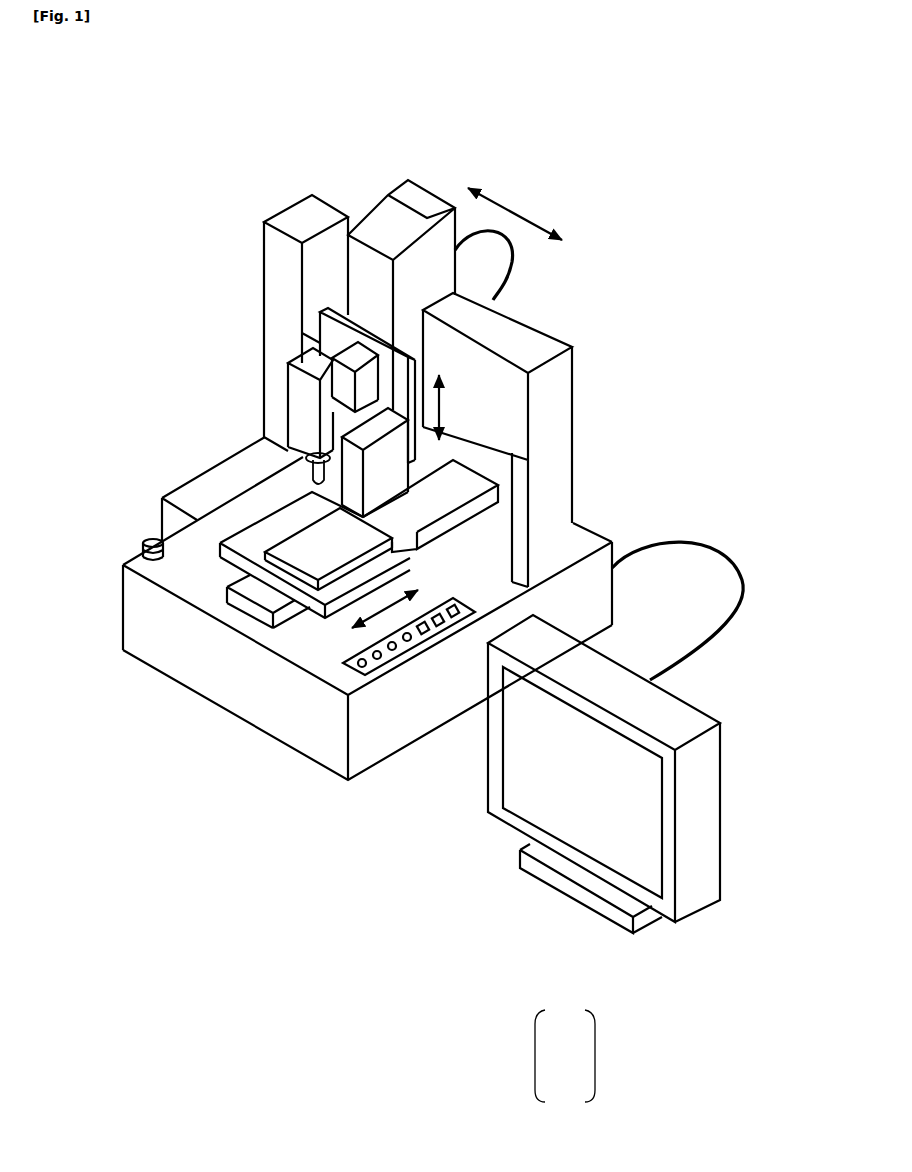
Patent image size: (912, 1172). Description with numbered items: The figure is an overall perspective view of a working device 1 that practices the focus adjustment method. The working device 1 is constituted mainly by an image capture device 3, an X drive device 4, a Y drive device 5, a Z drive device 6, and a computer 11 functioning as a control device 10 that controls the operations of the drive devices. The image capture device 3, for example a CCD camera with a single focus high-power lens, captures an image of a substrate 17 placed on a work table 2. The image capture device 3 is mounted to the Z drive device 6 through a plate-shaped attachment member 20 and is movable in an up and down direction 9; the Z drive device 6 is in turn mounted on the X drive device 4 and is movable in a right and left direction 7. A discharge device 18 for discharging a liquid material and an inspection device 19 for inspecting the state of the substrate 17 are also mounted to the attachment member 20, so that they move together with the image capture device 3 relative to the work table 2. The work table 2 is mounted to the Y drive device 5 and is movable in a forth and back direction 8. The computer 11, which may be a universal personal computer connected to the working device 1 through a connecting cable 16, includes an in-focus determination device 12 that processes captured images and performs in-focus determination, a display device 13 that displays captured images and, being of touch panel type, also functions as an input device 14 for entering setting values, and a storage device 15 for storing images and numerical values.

The working device 1 is at (312, 935).
The work table 2 is at (225, 562).
The image capture device 3 is at (355, 357).
The X drive device 4 is at (487, 390).
The Y drive device 5 is at (258, 597).
The Z drive device 6 is at (398, 222).
The right and left direction 7 is at (517, 217).
The forth and back direction 8 is at (383, 612).
The up and down direction 9 is at (440, 423).
The control device 10 is at (297, 215).
The computer 11 is at (597, 822).
The in-focus determination device 12 is at (559, 1020).
The display device 13 is at (559, 1045).
The input device 14 is at (559, 1070).
The storage device 15 is at (559, 1093).
The connecting cable 16 is at (720, 553).
The substrate 17 is at (313, 568).
The discharge device 18 is at (295, 390).
The inspection device 19 is at (355, 463).
The attachment member 20 is at (412, 347).